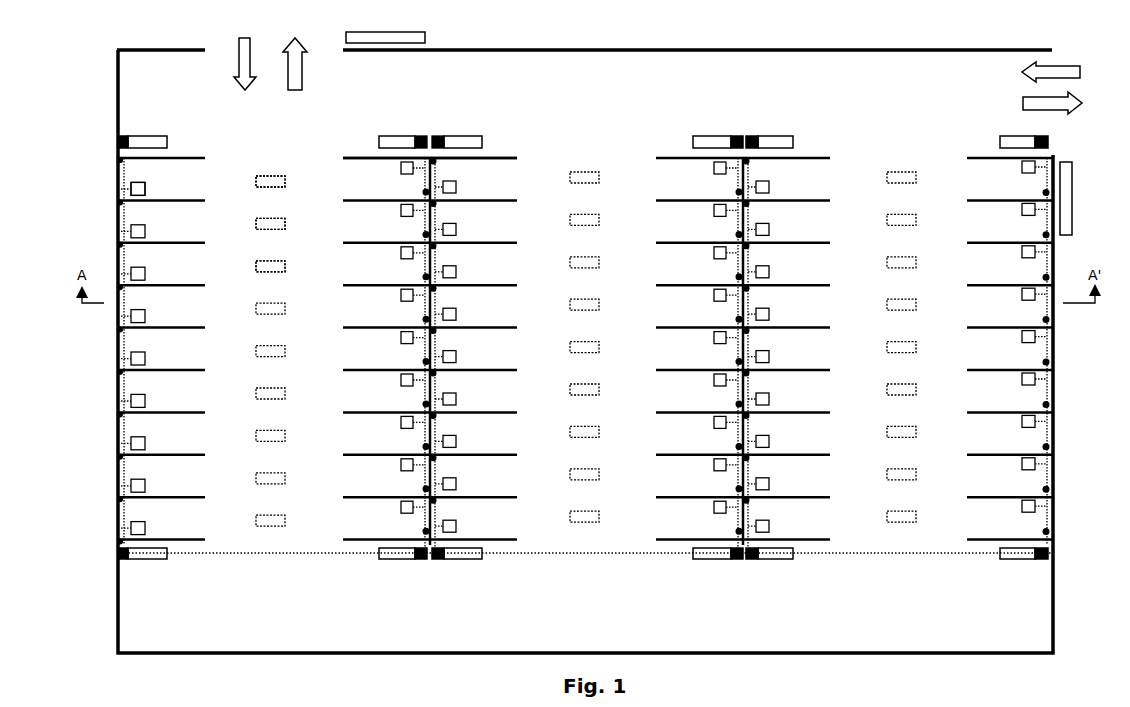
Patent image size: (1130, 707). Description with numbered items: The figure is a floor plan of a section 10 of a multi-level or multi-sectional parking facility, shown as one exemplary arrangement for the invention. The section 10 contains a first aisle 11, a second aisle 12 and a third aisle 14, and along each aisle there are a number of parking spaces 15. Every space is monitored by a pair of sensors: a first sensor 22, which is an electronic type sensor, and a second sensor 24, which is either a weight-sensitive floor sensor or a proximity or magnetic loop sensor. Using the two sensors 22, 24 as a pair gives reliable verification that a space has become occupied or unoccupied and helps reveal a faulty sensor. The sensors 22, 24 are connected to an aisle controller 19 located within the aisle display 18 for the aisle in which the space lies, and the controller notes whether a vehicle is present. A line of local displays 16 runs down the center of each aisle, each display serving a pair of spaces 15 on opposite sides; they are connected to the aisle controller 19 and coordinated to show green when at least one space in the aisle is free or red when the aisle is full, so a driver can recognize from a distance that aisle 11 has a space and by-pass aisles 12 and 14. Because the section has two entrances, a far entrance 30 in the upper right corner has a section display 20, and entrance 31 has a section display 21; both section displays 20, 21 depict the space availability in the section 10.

The section 10 is at (585, 341).
The first aisle 11 is at (223, 177).
The second aisle 12 is at (584, 329).
The third aisle 14 is at (901, 329).
The parking spaces 15 is at (342, 175).
The local displays 16 is at (306, 248).
The aisle display 18 is at (385, 126).
The aisle controller 19 is at (420, 126).
The section display 20 is at (1072, 167).
The section display 21 is at (357, 32).
The first sensor 22 is at (146, 166).
The second sensor 24 is at (158, 197).
The entrance 30 is at (1088, 60).
The entrance 31 is at (233, 29).